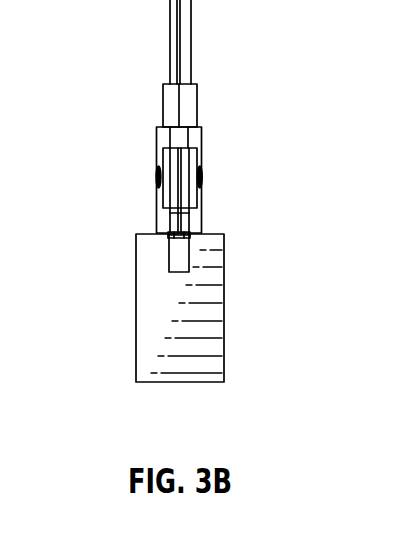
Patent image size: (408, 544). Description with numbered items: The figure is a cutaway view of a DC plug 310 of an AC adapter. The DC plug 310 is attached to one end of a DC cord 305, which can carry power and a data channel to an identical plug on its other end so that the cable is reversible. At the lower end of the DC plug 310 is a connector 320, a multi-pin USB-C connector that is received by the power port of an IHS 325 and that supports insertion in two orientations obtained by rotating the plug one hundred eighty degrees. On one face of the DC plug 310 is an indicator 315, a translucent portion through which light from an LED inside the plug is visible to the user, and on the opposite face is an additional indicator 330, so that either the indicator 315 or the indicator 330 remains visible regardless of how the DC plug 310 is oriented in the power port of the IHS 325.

The DC cord 305 is at (168, 53).
The DC plug 310 is at (157, 136).
The indicator 315 is at (160, 182).
The connector 320 is at (170, 252).
The IHS 325 is at (150, 328).
The additional indicator 330 is at (200, 175).